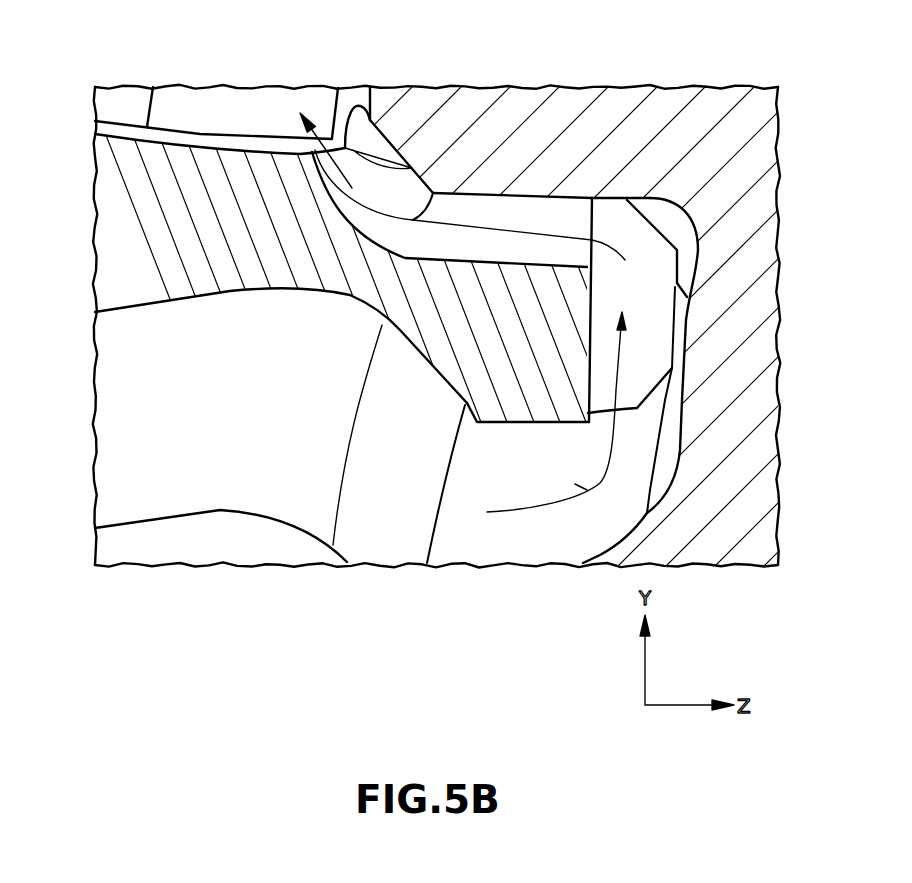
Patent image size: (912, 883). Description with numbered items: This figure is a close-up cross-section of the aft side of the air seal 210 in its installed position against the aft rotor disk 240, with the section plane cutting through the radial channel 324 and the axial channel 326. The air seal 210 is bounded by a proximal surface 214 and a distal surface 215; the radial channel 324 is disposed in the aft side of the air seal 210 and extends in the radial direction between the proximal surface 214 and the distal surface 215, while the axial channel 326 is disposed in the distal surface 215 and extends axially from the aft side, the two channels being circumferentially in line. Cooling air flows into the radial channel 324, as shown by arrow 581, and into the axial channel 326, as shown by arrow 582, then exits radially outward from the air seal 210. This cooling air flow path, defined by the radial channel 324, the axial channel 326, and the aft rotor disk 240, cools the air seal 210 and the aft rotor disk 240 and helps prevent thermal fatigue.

The air seal 210 is at (209, 235).
The proximal surface 214 is at (118, 434).
The distal surface 215 is at (117, 122).
The aft rotor disk 240 is at (671, 153).
The radial channel 324 is at (666, 350).
The axial channel 326 is at (522, 258).
The arrow 581 is at (574, 484).
The arrow 582 is at (433, 193).